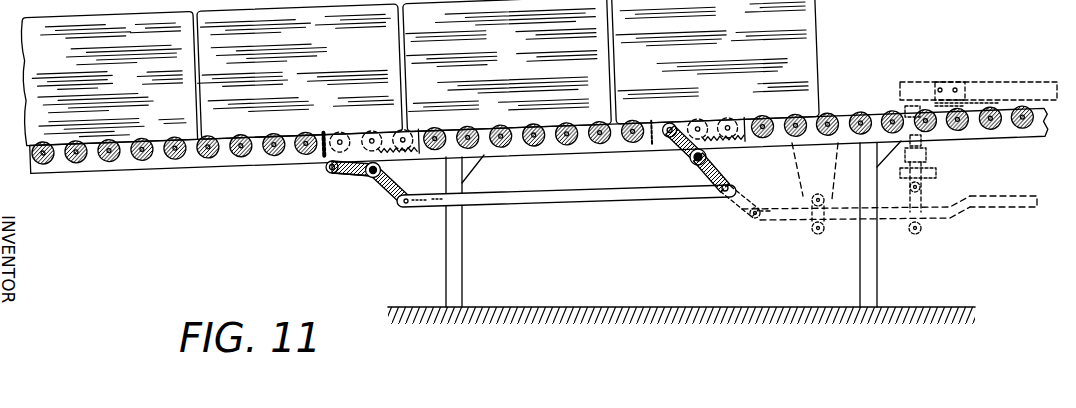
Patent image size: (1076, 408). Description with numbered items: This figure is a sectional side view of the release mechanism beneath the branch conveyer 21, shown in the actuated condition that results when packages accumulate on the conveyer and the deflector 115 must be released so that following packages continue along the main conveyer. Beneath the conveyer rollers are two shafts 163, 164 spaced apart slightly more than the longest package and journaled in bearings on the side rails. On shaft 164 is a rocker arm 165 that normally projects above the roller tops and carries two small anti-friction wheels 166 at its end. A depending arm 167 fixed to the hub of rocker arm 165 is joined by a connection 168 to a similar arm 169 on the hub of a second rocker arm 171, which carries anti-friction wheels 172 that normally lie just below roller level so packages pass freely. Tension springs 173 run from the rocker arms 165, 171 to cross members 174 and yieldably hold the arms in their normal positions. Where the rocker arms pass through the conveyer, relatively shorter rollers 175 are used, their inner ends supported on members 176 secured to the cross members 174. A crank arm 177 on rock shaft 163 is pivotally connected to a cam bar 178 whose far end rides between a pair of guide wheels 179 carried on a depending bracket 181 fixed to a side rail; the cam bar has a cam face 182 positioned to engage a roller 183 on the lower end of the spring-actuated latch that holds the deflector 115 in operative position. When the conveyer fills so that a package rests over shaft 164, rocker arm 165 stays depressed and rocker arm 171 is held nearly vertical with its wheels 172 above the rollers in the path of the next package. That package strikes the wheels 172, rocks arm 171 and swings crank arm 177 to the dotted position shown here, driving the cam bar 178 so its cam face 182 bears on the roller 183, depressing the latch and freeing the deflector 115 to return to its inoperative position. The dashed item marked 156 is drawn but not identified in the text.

The branch conveyer 21 is at (184, 164).
The deflector 115 is at (980, 84).
The actuating rod 156 is at (923, 194).
The rock shaft 163 is at (705, 185).
The rock shaft 164 is at (366, 186).
The rocker arm 165 is at (340, 178).
The anti-friction wheels 166 is at (330, 174).
The depending arm 167 is at (388, 190).
The connection 168 is at (528, 200).
The arm 169 is at (713, 186).
The rocker arm 171 is at (688, 172).
The anti-friction wheels 172 is at (668, 137).
The tension springs 173 is at (410, 156).
The cross members 174 is at (320, 153).
The shorter rollers 175 is at (337, 133).
The supporting members 176 is at (360, 132).
The crank arm 177 is at (748, 222).
The cam bar 178 is at (790, 230).
The guide wheels 179 is at (815, 236).
The depending bracket 181 is at (782, 216).
The cam face 182 is at (957, 215).
The roller 183 is at (916, 234).